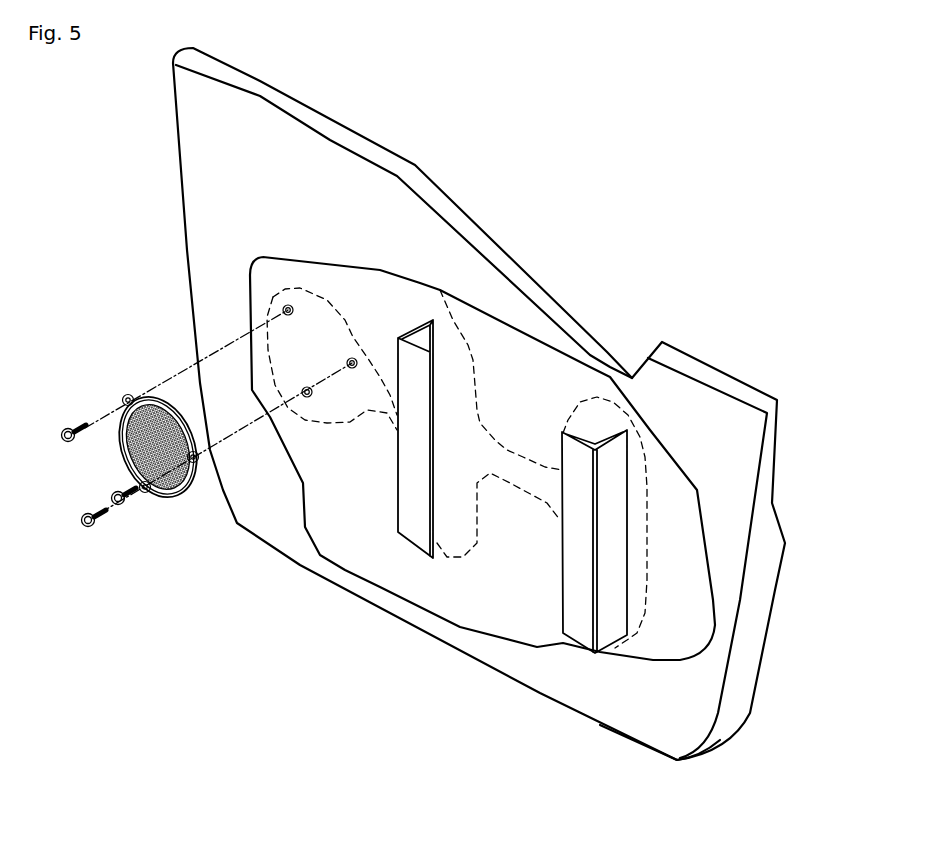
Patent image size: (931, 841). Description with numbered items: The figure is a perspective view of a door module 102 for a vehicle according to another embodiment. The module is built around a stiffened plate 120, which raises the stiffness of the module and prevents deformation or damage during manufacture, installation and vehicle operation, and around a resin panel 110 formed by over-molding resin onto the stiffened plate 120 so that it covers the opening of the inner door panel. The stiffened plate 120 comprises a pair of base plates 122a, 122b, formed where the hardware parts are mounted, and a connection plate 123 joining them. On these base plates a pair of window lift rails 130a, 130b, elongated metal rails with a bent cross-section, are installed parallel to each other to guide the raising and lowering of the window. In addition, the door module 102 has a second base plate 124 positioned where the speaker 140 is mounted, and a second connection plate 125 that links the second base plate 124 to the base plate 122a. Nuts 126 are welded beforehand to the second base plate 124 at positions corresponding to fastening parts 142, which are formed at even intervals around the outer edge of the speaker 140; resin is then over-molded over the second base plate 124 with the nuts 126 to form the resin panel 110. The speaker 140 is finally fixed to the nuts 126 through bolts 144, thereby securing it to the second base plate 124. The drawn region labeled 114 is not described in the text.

The door module 102 is at (752, 304).
The resin panel 110 is at (685, 533).
The recessed mounting surface 114 is at (405, 597).
The stiffened plate 120 is at (683, 762).
The base plate 122a is at (440, 290).
The base plate 122b is at (609, 397).
The connection plate 123 is at (522, 453).
The second base plate 124 is at (297, 295).
The second connection plate 125 is at (383, 377).
The nuts 126 is at (282, 310).
The window lift rail 130a is at (398, 533).
The window lift rail 130b is at (583, 635).
The speaker 140 is at (177, 500).
The fastening parts 142 is at (127, 400).
The bolts 144 is at (63, 443).